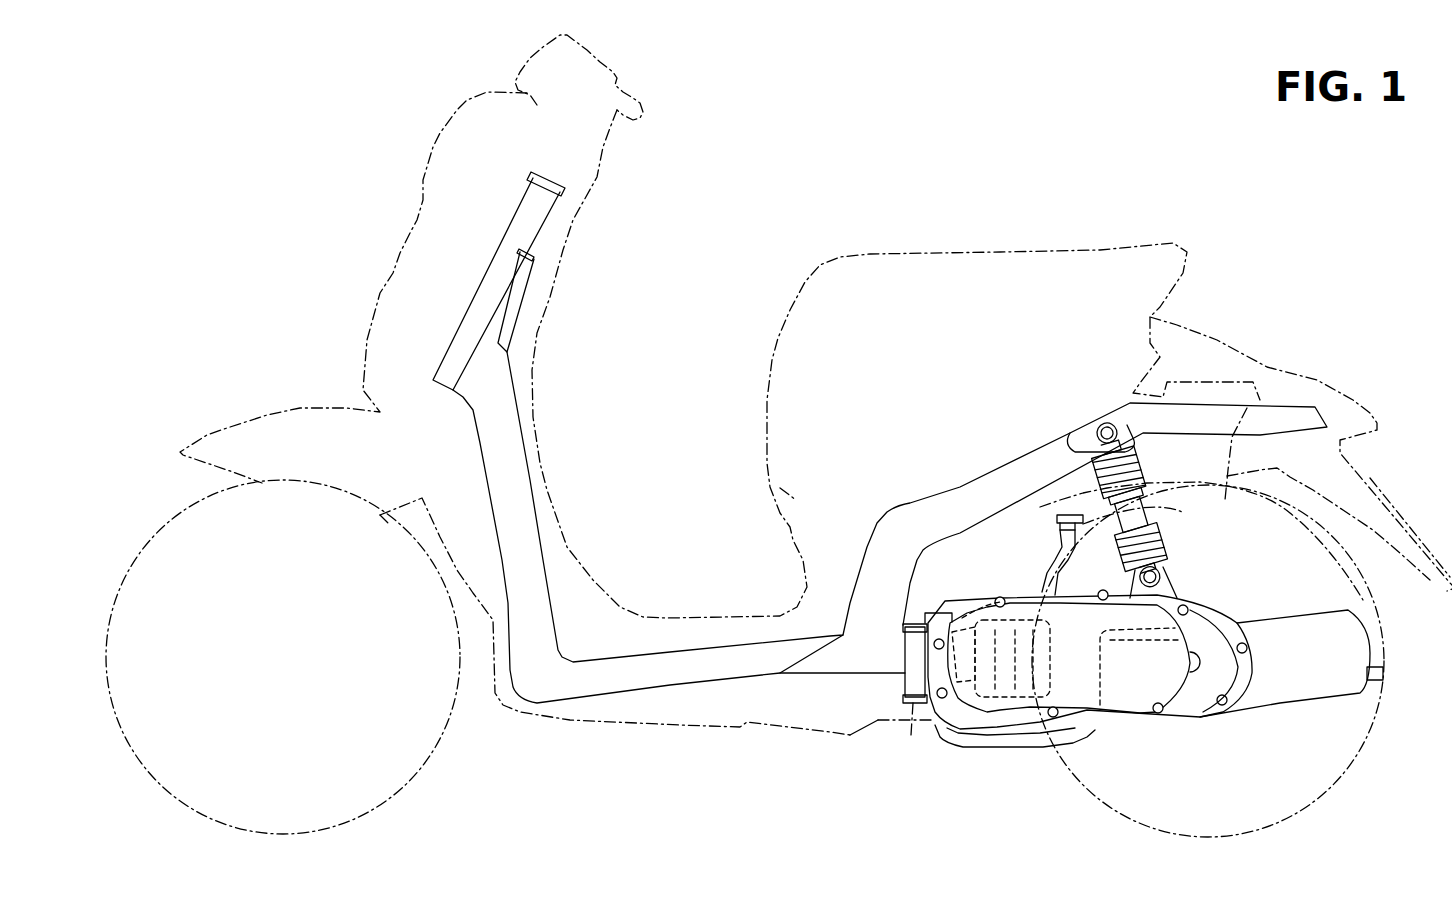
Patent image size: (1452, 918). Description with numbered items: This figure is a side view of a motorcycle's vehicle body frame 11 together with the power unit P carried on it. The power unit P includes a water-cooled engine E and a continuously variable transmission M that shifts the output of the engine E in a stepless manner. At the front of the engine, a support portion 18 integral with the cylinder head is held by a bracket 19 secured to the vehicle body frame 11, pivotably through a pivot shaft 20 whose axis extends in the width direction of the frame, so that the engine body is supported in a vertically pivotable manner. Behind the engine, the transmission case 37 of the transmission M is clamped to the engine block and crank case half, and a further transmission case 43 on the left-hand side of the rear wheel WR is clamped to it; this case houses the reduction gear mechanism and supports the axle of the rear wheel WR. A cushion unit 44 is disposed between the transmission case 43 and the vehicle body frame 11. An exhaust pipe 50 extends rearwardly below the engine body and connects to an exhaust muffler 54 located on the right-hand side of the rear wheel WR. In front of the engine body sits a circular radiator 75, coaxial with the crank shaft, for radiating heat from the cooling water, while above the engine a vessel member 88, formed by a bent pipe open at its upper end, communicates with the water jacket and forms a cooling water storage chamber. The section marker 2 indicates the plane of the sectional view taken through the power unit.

The vehicle body frame 11 is at (900, 513).
The support portion 18 is at (977, 603).
The bracket 19 is at (907, 616).
The pivot shaft 20 is at (878, 736).
The transmission case 37 is at (1128, 693).
The transmission case 43 is at (1205, 693).
The cushion unit 44 is at (1137, 510).
The exhaust pipe 50 is at (943, 748).
The exhaust muffler 54 is at (1273, 628).
The radiator 75 is at (905, 645).
The vessel member 88 is at (1052, 557).
The engine E is at (991, 716).
The continuously variable transmission M is at (1068, 718).
The power unit P is at (1090, 728).
The rear wheel WR is at (1342, 765).
The section line of FIG. 2 is at (883, 663).